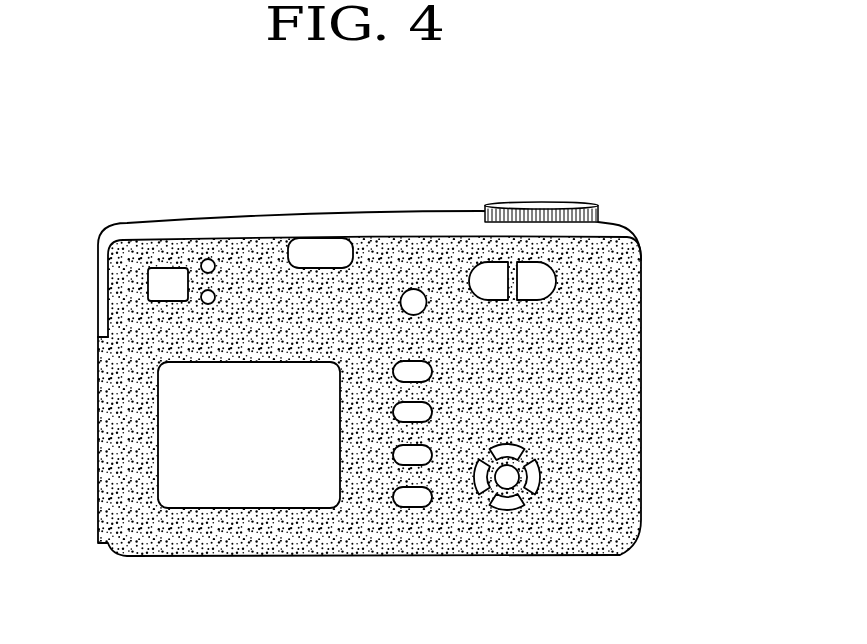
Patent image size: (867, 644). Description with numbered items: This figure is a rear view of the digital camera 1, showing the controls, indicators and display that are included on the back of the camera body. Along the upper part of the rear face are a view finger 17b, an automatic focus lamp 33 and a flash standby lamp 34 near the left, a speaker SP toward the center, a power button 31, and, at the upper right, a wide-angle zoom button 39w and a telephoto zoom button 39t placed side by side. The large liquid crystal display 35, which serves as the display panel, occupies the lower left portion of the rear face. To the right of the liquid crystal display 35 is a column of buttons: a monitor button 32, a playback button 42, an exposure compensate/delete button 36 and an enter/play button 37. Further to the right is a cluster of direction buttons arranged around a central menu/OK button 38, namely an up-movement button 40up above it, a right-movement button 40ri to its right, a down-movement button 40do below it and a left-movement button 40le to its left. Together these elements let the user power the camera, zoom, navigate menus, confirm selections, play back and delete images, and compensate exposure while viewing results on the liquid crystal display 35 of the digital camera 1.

The digital camera 1 is at (612, 162).
The view finger 17b is at (167, 280).
The automatic focus lamp 33 is at (212, 261).
The flash standby lamp 34 is at (201, 299).
The speaker SP is at (320, 252).
The power button 31 is at (414, 300).
The wide-angle zoom button 39w is at (485, 278).
The telephoto zoom button 39t is at (536, 276).
The monitor button 32 is at (432, 372).
The playback button 42 is at (433, 412).
The exposure compensate/delete button 36 is at (395, 458).
The enter/play button 37 is at (413, 506).
The liquid crystal display 35 is at (250, 490).
The up-movement button 40up is at (523, 447).
The right-movement button 40ri is at (540, 475).
The down-movement button 40do is at (508, 508).
The left-movement button 40le is at (473, 494).
The menu/OK button 38 is at (510, 478).